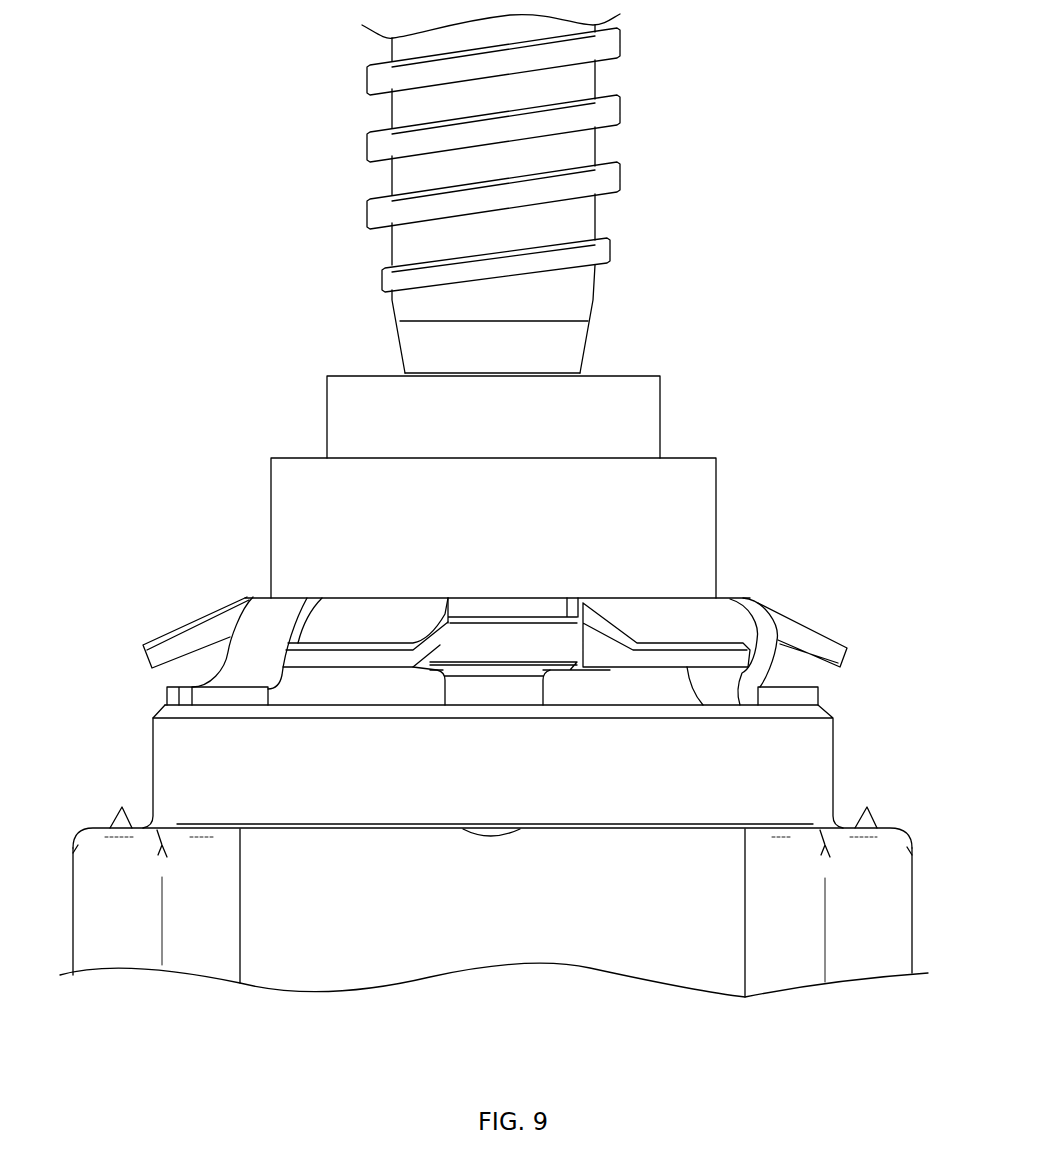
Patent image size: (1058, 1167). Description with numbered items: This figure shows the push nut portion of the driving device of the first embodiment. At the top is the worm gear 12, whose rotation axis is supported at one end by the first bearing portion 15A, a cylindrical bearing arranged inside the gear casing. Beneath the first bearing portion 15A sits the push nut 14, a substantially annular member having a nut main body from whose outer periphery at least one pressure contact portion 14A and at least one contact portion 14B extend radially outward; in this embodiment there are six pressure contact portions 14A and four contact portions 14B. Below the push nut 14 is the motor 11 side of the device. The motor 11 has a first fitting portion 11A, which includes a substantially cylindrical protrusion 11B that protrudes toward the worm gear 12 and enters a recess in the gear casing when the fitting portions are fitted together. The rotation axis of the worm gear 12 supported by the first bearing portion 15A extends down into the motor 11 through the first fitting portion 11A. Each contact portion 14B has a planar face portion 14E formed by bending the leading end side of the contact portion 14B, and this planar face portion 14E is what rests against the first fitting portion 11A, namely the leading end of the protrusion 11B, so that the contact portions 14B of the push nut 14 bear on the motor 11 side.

The worm gear 12 is at (622, 114).
The first bearing portion 15A is at (717, 503).
The push nut 14 is at (762, 605).
The pressure contact portion 14A is at (363, 620).
The contact portion 14B is at (242, 668).
The planar face portion 14E is at (215, 697).
The electric motor 11 is at (900, 828).
The first fitting portion 11A is at (492, 766).
The protrusion 11B is at (153, 765).